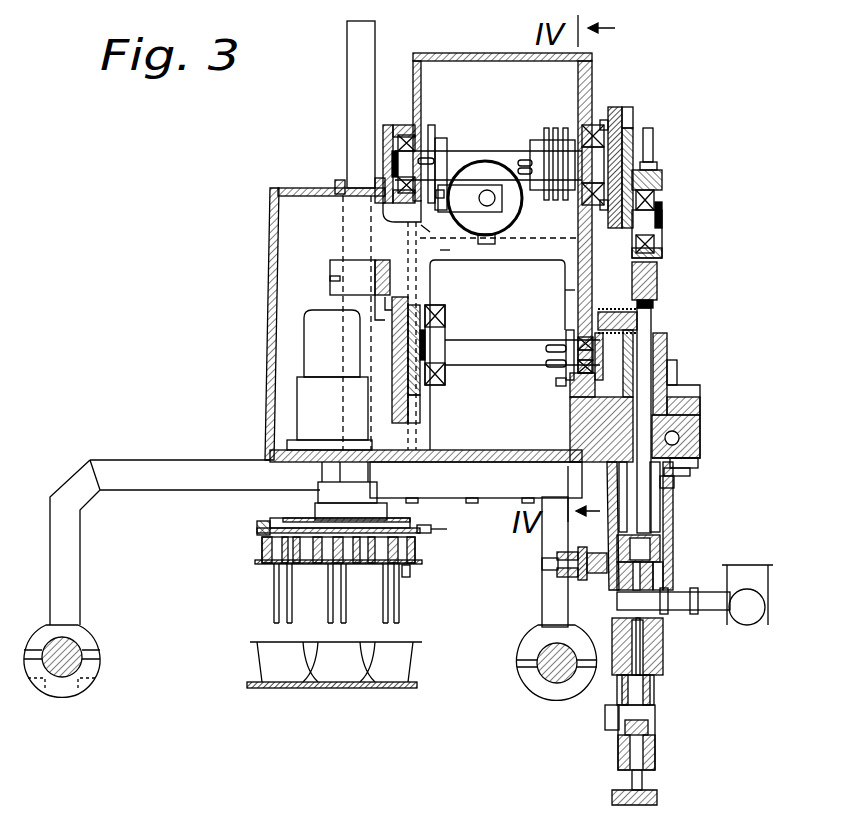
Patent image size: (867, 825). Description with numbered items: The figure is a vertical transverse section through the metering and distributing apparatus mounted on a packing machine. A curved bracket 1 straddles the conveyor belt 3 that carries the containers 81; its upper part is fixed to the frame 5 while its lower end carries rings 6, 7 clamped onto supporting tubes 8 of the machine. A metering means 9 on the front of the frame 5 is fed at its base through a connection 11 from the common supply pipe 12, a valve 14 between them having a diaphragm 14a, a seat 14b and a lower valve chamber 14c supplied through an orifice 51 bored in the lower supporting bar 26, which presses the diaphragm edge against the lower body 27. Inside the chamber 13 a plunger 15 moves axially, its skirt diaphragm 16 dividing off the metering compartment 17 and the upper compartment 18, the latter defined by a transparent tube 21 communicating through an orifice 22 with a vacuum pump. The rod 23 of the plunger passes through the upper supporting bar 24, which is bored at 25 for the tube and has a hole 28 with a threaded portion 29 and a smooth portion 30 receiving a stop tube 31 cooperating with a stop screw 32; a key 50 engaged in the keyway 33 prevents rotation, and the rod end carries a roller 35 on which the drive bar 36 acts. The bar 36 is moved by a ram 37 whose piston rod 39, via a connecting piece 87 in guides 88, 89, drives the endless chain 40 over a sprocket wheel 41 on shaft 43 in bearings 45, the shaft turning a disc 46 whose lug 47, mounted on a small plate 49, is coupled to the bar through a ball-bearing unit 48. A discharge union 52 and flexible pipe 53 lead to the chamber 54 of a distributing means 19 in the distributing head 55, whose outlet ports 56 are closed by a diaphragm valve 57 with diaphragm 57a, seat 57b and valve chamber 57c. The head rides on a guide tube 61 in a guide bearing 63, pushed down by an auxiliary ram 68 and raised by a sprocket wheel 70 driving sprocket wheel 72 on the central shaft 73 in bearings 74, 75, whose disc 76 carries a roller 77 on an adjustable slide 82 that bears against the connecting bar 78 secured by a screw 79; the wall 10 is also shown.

The curved bracket 1 is at (126, 490).
The conveyor belt 3 is at (280, 688).
The frame 5 is at (598, 268).
The ring 6 is at (78, 650).
The ring 7 is at (545, 657).
The supporting tube 8 is at (62, 668).
The metering means 9 is at (658, 576).
The housing wall 10 is at (578, 292).
The connection 11 is at (672, 592).
The common supply pipe 12 is at (750, 610).
The chamber 13 is at (612, 575).
The valve 14 is at (650, 680).
The diaphragm 14a is at (645, 645).
The seat 14b is at (645, 622).
The lower valve chamber 14c is at (642, 632).
The plunger 15 is at (676, 560).
The diaphragm 16 is at (618, 535).
The metering compartment 17 is at (560, 618).
The upper compartment 18 is at (690, 528).
The distributing means 19 is at (422, 574).
The transparent tube 21 is at (673, 508).
The orifice 22 is at (690, 472).
The rod 23 is at (652, 330).
The upper supporting bar 24 is at (615, 310).
The bore 25 is at (668, 488).
The lower supporting bar 26 is at (630, 630).
The lower body 27 is at (612, 650).
The bored hole 28 is at (572, 430).
The upper screw-threaded portion 29 is at (700, 395).
The lower smooth portion 30 is at (700, 440).
The tube 31 is at (677, 374).
The stop screw 32 is at (600, 498).
The keyway 33 is at (667, 355).
The roller 35 is at (655, 305).
The drive bar 36 is at (657, 275).
The ram 37 is at (510, 250).
The piston rod 39 is at (495, 201).
The endless chain 40 is at (436, 229).
The sprocket wheel 41 is at (432, 140).
The shaft 43 is at (499, 162).
The bearing 45 is at (412, 142).
The disc 46 is at (615, 110).
The lug 47 is at (648, 218).
The ball-bearing unit 48 is at (654, 196).
The small plate 49 is at (633, 114).
The key 50 is at (700, 412).
The orifice 51 is at (650, 700).
The discharge union 52 is at (580, 578).
The flexible pipe 53 is at (440, 547).
The chamber 54 is at (395, 580).
The distributing head 55 is at (267, 574).
The outlet port 56 is at (395, 622).
The pneumatic diaphragm valve 57 is at (257, 527).
The diaphragm 57a is at (392, 530).
The seat 57b is at (268, 545).
The valve chamber 57c is at (266, 520).
The guide tube 61 is at (358, 68).
The guide bearing 63 is at (340, 180).
The auxiliary ram 68 is at (305, 398).
The sprocket wheel 70 is at (566, 140).
The sprocket wheel 72 is at (558, 386).
The central shaft 73 is at (474, 357).
The bearing 74 is at (440, 340).
The bearing 75 is at (566, 335).
The disc 76 is at (418, 385).
The roller 77 is at (380, 322).
The connecting bar 78 is at (398, 297).
The screw 79 is at (330, 278).
The container 81 is at (262, 652).
The slide 82 is at (410, 420).
The connecting piece 87 is at (468, 206).
The guide 88 is at (446, 188).
The guide 89 is at (442, 251).